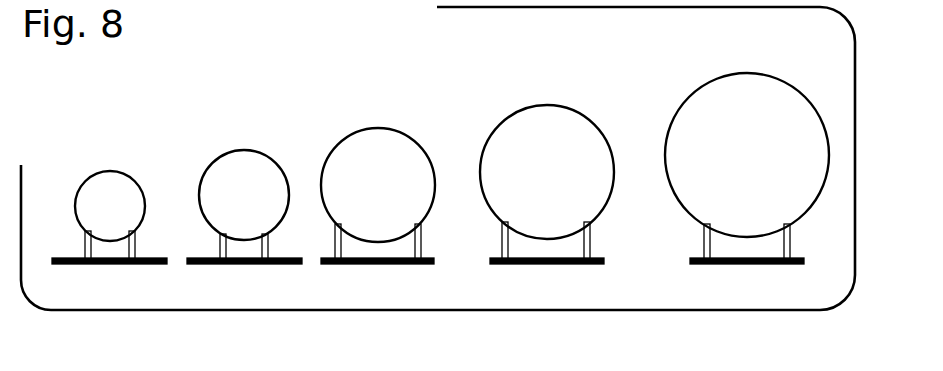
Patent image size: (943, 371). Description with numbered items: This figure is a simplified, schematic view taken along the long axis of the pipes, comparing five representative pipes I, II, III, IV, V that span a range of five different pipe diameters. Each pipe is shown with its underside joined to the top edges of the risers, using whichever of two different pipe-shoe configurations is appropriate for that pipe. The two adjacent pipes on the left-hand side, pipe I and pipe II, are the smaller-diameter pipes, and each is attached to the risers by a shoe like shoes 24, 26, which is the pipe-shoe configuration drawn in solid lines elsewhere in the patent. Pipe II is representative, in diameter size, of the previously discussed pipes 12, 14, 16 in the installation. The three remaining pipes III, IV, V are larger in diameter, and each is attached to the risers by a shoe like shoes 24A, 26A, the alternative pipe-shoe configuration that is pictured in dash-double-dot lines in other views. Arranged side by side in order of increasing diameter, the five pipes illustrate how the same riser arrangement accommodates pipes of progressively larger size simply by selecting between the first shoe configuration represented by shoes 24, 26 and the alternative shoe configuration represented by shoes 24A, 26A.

The pipe I is at (112, 169).
The pipe II is at (282, 171).
The pipe 12 is at (282, 171).
The pipe 14 is at (282, 171).
The pipe 16 is at (243, 148).
The pipe III is at (403, 125).
The pipe IV is at (549, 102).
The pipe V is at (750, 69).
The shoe 24 is at (177, 267).
The shoe 26 is at (248, 268).
The shoe 24A is at (562, 262).
The shoe 26A is at (707, 268).